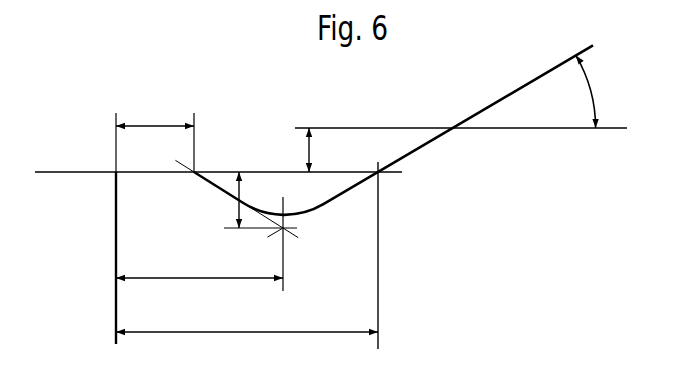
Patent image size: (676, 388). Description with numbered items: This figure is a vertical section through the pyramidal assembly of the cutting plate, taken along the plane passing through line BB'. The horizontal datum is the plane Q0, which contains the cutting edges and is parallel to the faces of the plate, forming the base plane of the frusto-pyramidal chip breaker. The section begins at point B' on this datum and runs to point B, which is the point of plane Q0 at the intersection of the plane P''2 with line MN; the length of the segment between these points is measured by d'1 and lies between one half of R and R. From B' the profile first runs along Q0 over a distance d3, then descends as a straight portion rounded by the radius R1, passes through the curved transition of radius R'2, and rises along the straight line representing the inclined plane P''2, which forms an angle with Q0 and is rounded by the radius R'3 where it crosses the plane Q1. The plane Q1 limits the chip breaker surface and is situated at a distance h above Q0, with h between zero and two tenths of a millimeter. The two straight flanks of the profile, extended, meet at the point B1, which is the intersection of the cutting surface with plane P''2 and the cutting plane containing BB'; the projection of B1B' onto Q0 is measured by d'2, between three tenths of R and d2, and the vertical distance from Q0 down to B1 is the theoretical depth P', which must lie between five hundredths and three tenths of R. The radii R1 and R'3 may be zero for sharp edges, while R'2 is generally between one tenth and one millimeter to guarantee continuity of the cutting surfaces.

The plane Qo Q0 is at (218, 161).
The point B' is at (104, 228).
The distance d3 from B' to start of inclined portion d3 is at (155, 138).
The radius R'2 is at (268, 144).
The plane Q1 is at (461, 118).
The distance h is at (316, 150).
The point B is at (399, 255).
The plane P''2 is at (588, 31).
The theoretical depth p' P' is at (231, 200).
The point B1 is at (315, 230).
The radius R1 is at (195, 174).
The radius R'3 is at (480, 191).
The segment d'2 is at (199, 269).
The segment d'1 is at (247, 322).